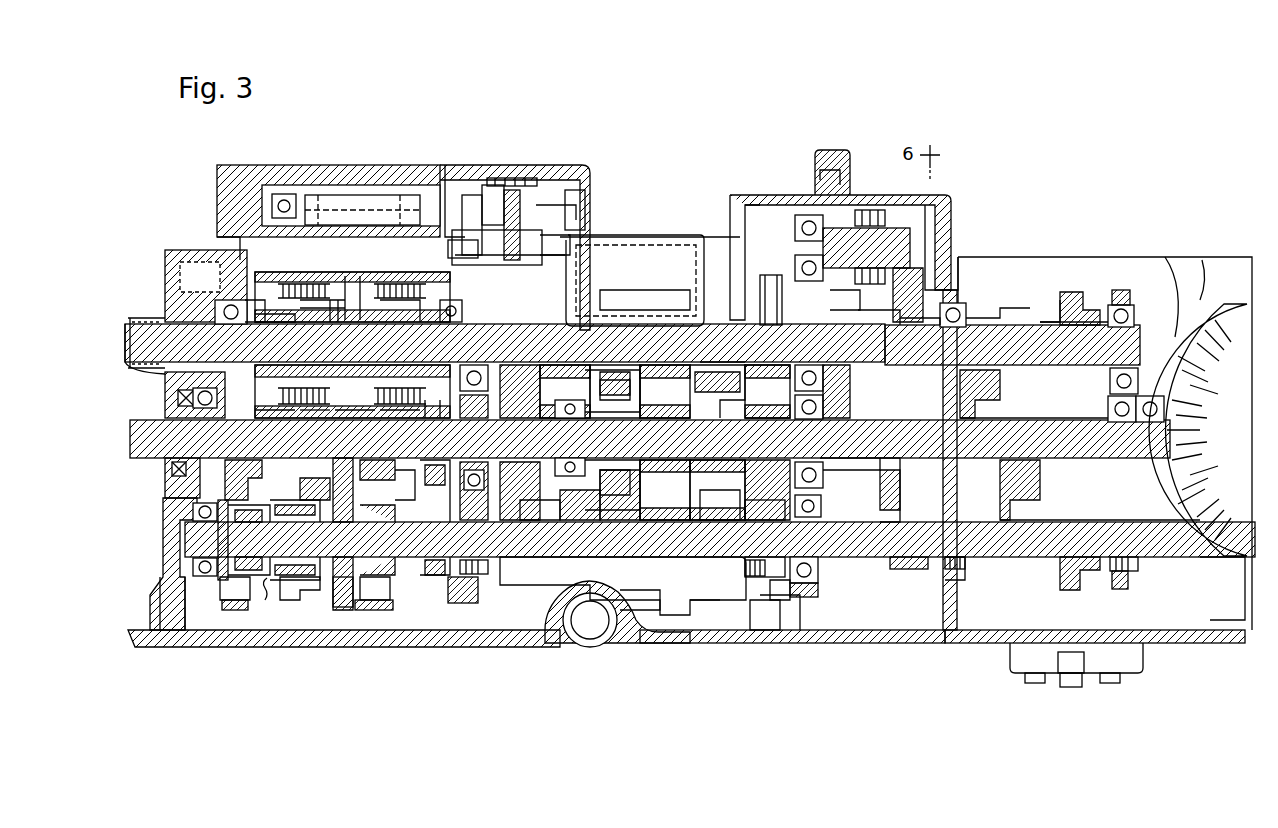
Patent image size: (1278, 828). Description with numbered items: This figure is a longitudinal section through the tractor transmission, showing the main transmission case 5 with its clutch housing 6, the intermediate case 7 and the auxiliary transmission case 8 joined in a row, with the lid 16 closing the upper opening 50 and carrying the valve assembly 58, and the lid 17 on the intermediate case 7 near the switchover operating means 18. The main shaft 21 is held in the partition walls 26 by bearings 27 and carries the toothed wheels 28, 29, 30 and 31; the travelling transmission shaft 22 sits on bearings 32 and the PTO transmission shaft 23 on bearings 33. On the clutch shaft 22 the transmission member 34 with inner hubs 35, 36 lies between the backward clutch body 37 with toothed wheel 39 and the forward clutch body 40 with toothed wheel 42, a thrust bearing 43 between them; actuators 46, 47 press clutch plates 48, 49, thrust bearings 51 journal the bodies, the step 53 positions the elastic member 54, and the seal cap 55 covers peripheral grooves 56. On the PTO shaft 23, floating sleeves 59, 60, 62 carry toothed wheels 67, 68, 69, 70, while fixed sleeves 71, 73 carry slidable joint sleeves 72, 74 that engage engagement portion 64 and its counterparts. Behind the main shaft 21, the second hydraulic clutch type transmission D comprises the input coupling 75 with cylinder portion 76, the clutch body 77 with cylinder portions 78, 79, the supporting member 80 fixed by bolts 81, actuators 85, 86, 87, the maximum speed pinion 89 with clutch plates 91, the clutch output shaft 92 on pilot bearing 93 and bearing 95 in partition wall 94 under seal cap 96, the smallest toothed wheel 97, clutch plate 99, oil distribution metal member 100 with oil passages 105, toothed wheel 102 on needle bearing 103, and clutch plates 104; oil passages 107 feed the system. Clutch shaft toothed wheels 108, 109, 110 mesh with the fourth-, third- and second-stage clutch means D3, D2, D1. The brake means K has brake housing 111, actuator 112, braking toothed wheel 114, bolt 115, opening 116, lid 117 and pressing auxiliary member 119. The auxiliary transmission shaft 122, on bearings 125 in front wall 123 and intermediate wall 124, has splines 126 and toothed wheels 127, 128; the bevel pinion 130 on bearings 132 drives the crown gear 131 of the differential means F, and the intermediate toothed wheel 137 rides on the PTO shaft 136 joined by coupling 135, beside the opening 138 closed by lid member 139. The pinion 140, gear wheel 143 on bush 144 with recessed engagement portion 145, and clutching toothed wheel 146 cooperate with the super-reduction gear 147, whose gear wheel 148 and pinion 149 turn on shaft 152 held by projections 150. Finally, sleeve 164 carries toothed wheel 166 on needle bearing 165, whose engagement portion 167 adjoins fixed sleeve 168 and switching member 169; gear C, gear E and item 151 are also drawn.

The main transmission case 5 is at (348, 647).
The clutch housing 6 is at (142, 648).
The intermediate case 7 is at (882, 645).
The auxiliary transmission case 8 is at (1209, 645).
The lid 16 is at (234, 166).
The lid 17 is at (944, 196).
The switchover operating means 18 is at (400, 209).
The main shaft 21 is at (142, 438).
The travelling transmission shaft 22 is at (541, 328).
The PTO transmission shaft 23 is at (540, 558).
The partition walls 26 is at (160, 600).
The bearings 27 is at (174, 480).
The toothed wheel 28 is at (246, 472).
The largest diameter toothed wheel 29 is at (324, 470).
The smallest diameter toothed wheel 30 is at (358, 422).
The toothed wheel 31 is at (436, 416).
The bearings 32 is at (178, 378).
The bearings 33 is at (180, 515).
The transmission member 34 is at (339, 320).
The inner hub 35 is at (310, 322).
The inner hub 36 is at (392, 322).
The clutch body for backward travelling 37 is at (254, 280).
The transmission toothed wheel 39 is at (262, 413).
The clutch body for forward travelling 40 is at (358, 276).
The transmission toothed wheel 42 is at (406, 418).
The thrust bearing 43 is at (312, 407).
The actuator 46 is at (258, 398).
The actuator 47 is at (408, 278).
The clutch plates 48 is at (312, 274).
The clutch plates 49 is at (358, 296).
The upper opening 50 is at (253, 225).
The thrust bearings 51 is at (446, 322).
The step 53 is at (250, 320).
The elastic member 54 is at (220, 310).
The seal cap 55 is at (130, 362).
The peripheral grooves 56 is at (148, 321).
The valve assembly 58 is at (332, 194).
The floating sleeve 59 is at (226, 526).
The floating sleeve 60 is at (324, 522).
The floating sleeve 62 is at (458, 526).
The engagement portion 64 is at (364, 522).
The third-speed toothed wheel 67 is at (230, 615).
The top-speed toothed wheel 68 is at (340, 615).
The low-speed toothed wheel 69 is at (382, 613).
The second-speed toothed wheel 70 is at (448, 640).
The fixed sleeve 71 is at (280, 516).
The slidable joint sleeve 72 is at (299, 598).
The fixed sleeve 73 is at (408, 524).
The slidable joint sleeve 74 is at (404, 493).
The input coupling 75 is at (530, 488).
The cylinder portion 76 is at (582, 523).
The clutch body 77 is at (854, 354).
The cylinder portion 78 is at (704, 364).
The cylinder portion 79 is at (822, 402).
The supporting member 80 is at (610, 560).
The bolts 81 is at (664, 364).
The actuator 85 is at (604, 364).
The actuator 86 is at (800, 355).
The actuator 87 is at (822, 378).
The maximum speed pinion 89 is at (480, 422).
The hydraulic clutch plates 91 is at (542, 525).
The clutch output shaft 92 is at (826, 472).
The pilot bearing 93 is at (545, 424).
The partition wall 94 is at (816, 578).
The bearing 95 is at (816, 502).
The seal cap 96 is at (884, 476).
The smallest diameter toothed wheel 97 is at (856, 462).
The hydraulic clutch plate 99 is at (622, 523).
The oil distribution metal member 100 is at (638, 418).
The toothed wheel 102 is at (730, 434).
The needle bearing 103 is at (756, 462).
The hydraulic clutch plates 104 is at (702, 522).
The oil passages 105 is at (616, 436).
The oil passages 107 is at (678, 300).
The transmission toothed wheel 108 is at (482, 282).
The transmission toothed wheel 109 is at (748, 278).
The transmission toothed wheel 110 is at (772, 274).
The brake housing 111 is at (466, 192).
The actuator 112 is at (488, 184).
The braking toothed wheel 114 is at (584, 180).
The bolt 115 is at (510, 178).
The opening 116 is at (522, 186).
The lid 117 is at (538, 208).
The pressing auxiliary member 119 is at (548, 238).
The auxiliary transmission shaft 122 is at (1136, 348).
The front wall 123 is at (964, 578).
The intermediate wall 124 is at (1130, 592).
The bearings 125 is at (956, 304).
The splines 126 is at (962, 402).
The splined toothed wheel 127 is at (990, 306).
The splined toothed wheel 128 is at (1084, 292).
The bevel pinion 130 is at (1201, 430).
The crown gear 131 is at (1176, 270).
The bearings 132 is at (1128, 398).
The coupling 135 is at (898, 568).
The PTO shaft 136 is at (1196, 566).
The intermediate toothed wheel 137 is at (1058, 590).
The opening 138 is at (1012, 660).
The lid member 139 is at (1125, 672).
The pinion 140 is at (846, 335).
The gear wheel 143 is at (884, 270).
The bush or metal 144 is at (933, 340).
The recessed engagement portion 145 is at (965, 262).
The clutching toothed wheel 146 is at (904, 330).
The super-reduction gear 147 is at (842, 187).
The gear wheel 148 is at (818, 170).
The pinion 149 is at (872, 210).
The projections 150 is at (855, 280).
The bearing 151 is at (806, 221).
The shaft 152 is at (904, 272).
The sleeve 164 is at (760, 522).
The needle bearing 165 is at (786, 560).
The toothed wheel 166 is at (786, 610).
The engagement portion 167 is at (780, 602).
The fixed sleeve 168 is at (744, 572).
The switching member 169 is at (756, 614).
The gear C is at (263, 604).
The second hydraulic clutch type transmission D is at (680, 562).
The forward-travelling second stage clutch means D1 is at (714, 362).
The forward-travelling third-stage clutch means D2 is at (694, 462).
The forward-travelling fourth-stage clutch means D3 is at (560, 364).
The gear E is at (1048, 306).
The differential means F is at (1220, 290).
The inertial rotation prevention brake means K is at (548, 176).